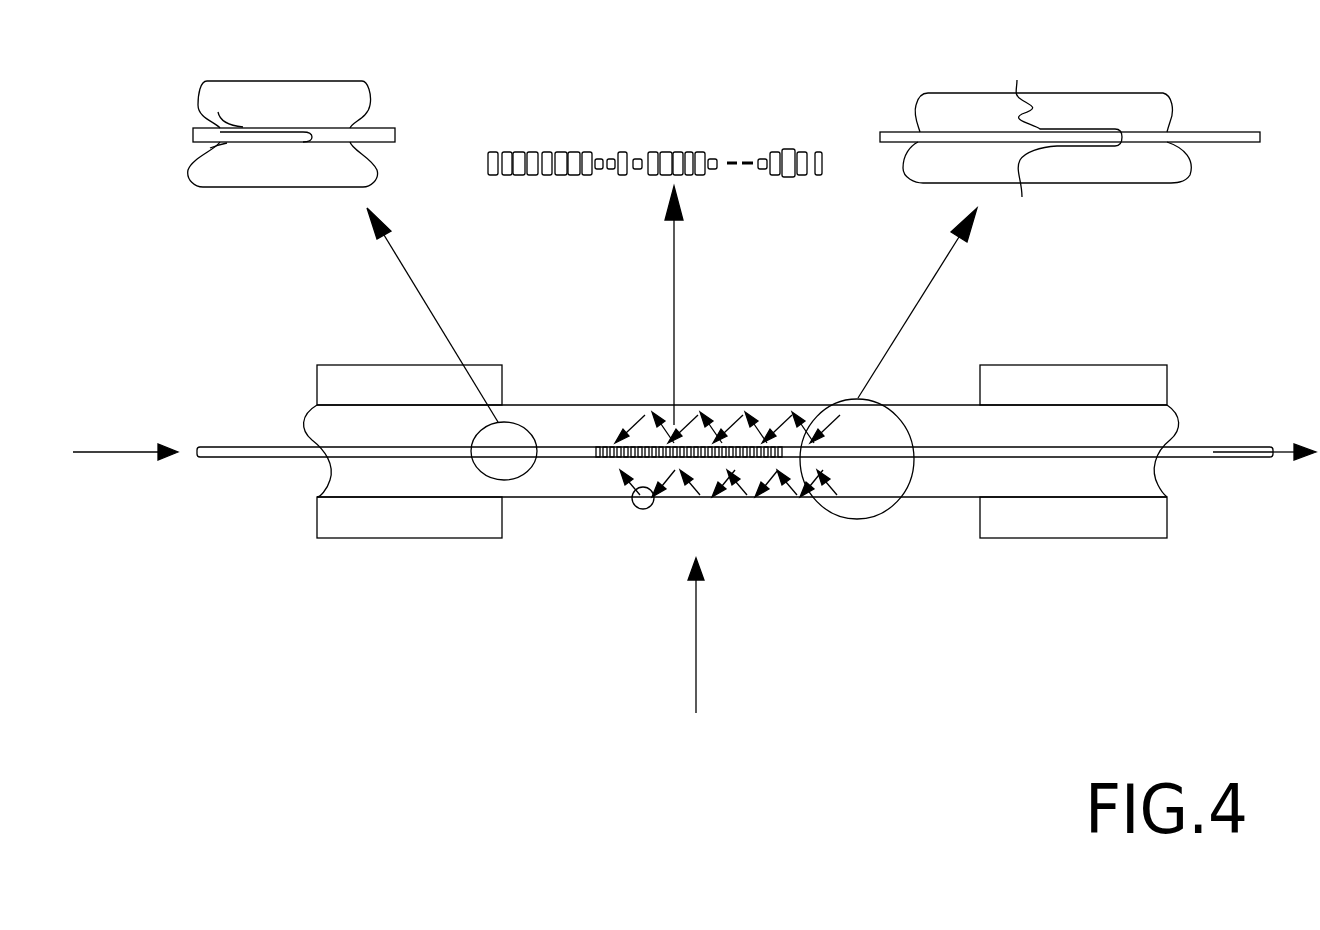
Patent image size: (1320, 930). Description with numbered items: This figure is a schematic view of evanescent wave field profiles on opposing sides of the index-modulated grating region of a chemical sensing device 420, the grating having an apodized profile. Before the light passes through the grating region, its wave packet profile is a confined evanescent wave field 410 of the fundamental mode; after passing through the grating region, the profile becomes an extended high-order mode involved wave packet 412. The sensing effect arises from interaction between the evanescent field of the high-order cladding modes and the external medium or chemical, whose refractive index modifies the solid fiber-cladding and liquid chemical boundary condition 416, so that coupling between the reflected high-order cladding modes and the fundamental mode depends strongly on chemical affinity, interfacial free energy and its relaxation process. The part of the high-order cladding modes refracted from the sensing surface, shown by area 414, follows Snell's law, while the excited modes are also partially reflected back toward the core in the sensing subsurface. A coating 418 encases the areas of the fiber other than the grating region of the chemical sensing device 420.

The confined evanescent wave field 410 is at (259, 181).
The extended high-order mode involved wave packet 412 is at (1103, 182).
The area of refracted high-order cladding modes 414 is at (636, 506).
The solid and liquid boundary condition 416 is at (732, 497).
The coating 418 is at (383, 527).
The chemical sensing device 420 is at (696, 713).